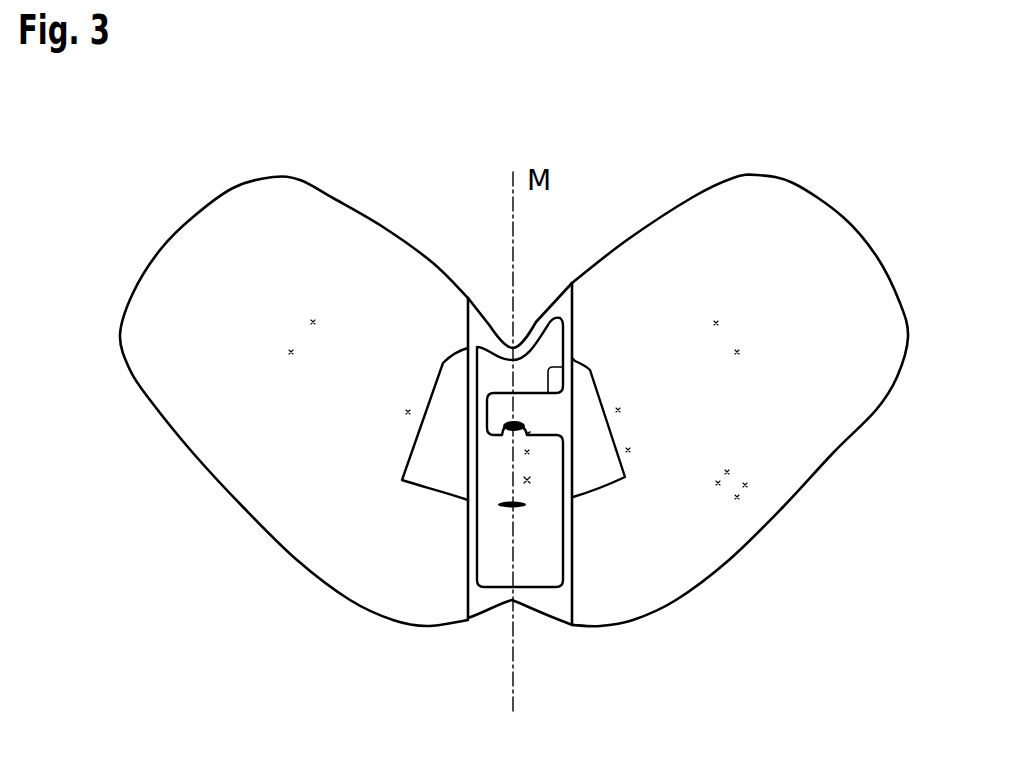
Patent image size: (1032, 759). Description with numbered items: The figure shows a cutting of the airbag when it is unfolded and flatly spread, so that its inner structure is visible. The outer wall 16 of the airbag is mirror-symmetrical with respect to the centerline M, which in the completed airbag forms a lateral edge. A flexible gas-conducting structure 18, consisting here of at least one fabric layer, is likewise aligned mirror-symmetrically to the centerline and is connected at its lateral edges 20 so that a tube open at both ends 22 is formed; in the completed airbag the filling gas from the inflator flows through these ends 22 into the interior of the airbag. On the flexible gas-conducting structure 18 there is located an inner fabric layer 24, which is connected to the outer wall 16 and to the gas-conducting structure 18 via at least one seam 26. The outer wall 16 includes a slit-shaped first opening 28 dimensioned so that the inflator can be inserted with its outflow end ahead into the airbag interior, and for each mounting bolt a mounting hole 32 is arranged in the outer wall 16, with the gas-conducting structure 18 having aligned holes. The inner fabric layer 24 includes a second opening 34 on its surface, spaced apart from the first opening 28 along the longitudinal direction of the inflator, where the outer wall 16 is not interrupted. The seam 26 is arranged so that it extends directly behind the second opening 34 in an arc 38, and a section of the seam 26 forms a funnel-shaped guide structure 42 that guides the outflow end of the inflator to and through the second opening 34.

The outer wall 16 is at (228, 223).
The flexible gas-conducting structure 18 is at (593, 427).
The lateral edges 20 is at (425, 412).
The ends 22 is at (458, 352).
The inner fabric layer 24 is at (550, 577).
The seam 26 is at (468, 548).
The first opening 28 is at (505, 512).
The mounting hole 32 is at (532, 482).
The second opening 34 is at (510, 432).
The arc 38 is at (575, 360).
The guide structure 42 is at (530, 432).